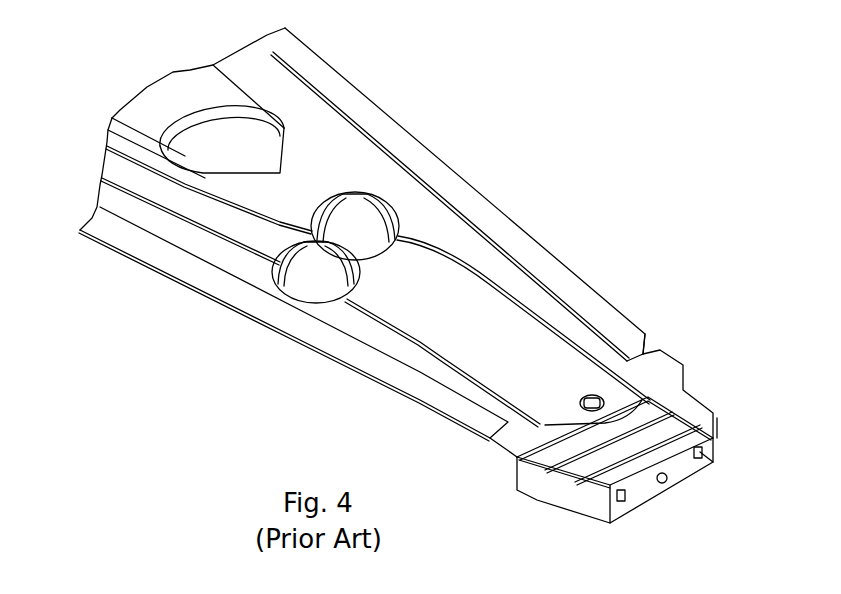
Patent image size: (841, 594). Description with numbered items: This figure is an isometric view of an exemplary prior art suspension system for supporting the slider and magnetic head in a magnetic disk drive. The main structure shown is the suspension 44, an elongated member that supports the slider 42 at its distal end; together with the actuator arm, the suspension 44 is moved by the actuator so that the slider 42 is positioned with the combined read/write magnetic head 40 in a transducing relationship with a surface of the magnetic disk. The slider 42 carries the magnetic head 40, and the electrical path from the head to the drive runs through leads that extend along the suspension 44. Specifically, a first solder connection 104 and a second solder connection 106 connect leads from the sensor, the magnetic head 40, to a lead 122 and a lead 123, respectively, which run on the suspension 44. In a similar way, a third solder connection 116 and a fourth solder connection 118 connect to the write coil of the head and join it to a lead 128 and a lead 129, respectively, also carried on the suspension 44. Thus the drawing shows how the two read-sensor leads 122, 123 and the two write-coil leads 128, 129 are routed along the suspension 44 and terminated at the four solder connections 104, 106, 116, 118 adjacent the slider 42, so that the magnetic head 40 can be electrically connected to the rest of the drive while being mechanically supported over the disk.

The suspension 44 is at (496, 201).
The lead 123 is at (550, 318).
The lead 129 is at (484, 277).
The lead 128 is at (400, 342).
The lead 122 is at (493, 332).
The slider 42 is at (626, 492).
The first solder connection 104 is at (611, 523).
The third solder connection 116 is at (637, 518).
The magnetic head 40 is at (663, 485).
The second solder connection 106 is at (717, 445).
The fourth solder connection 118 is at (700, 477).